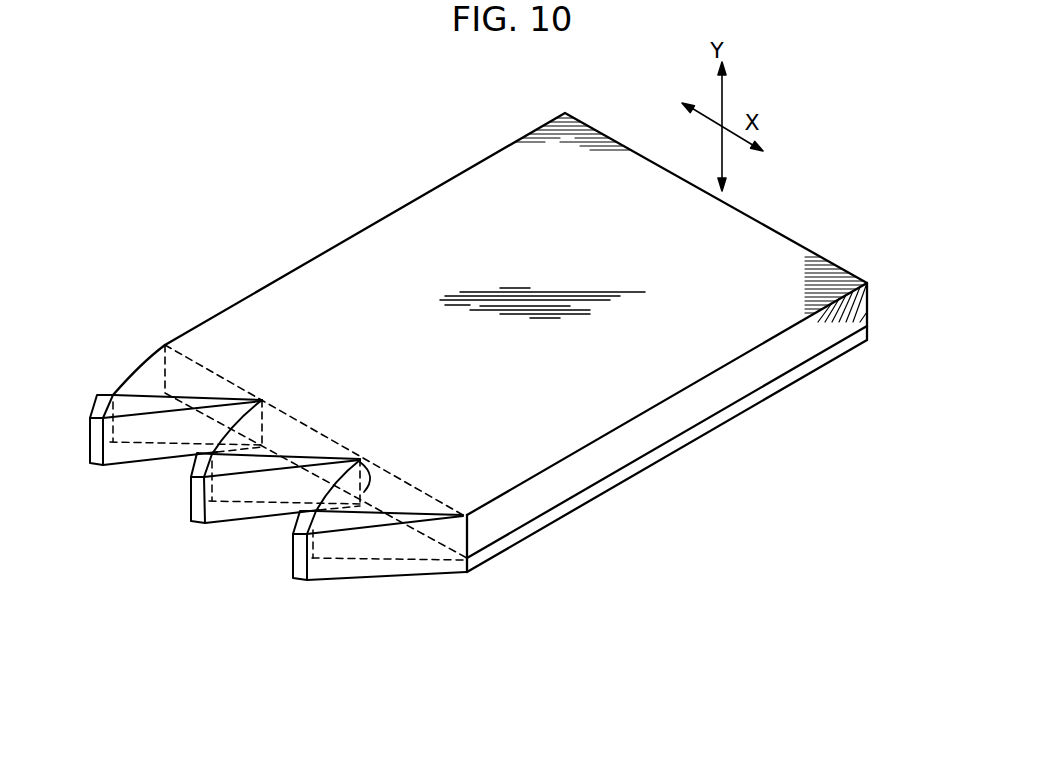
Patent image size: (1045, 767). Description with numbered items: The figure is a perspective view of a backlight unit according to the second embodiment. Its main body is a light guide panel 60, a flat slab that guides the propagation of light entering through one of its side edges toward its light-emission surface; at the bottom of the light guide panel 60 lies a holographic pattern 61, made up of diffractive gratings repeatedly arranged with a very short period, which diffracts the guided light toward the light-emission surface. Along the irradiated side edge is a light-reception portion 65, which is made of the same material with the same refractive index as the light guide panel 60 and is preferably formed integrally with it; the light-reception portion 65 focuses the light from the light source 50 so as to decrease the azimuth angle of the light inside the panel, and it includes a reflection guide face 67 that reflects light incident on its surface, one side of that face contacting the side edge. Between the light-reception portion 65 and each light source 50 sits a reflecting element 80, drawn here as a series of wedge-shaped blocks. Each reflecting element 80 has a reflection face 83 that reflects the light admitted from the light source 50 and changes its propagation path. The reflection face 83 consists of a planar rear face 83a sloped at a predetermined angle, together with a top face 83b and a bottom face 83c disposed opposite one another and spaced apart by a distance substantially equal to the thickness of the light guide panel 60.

The light source 50 is at (290, 550).
The light guide panel 60 is at (782, 253).
The holographic pattern 61 is at (833, 357).
The light-reception portion 65 is at (398, 490).
The reflection guide face 67 is at (360, 458).
The reflecting element 80 is at (323, 590).
The reflection face 83 is at (407, 571).
The rear face 83a is at (415, 512).
The top face 83b is at (313, 525).
The bottom face 83c is at (386, 583).